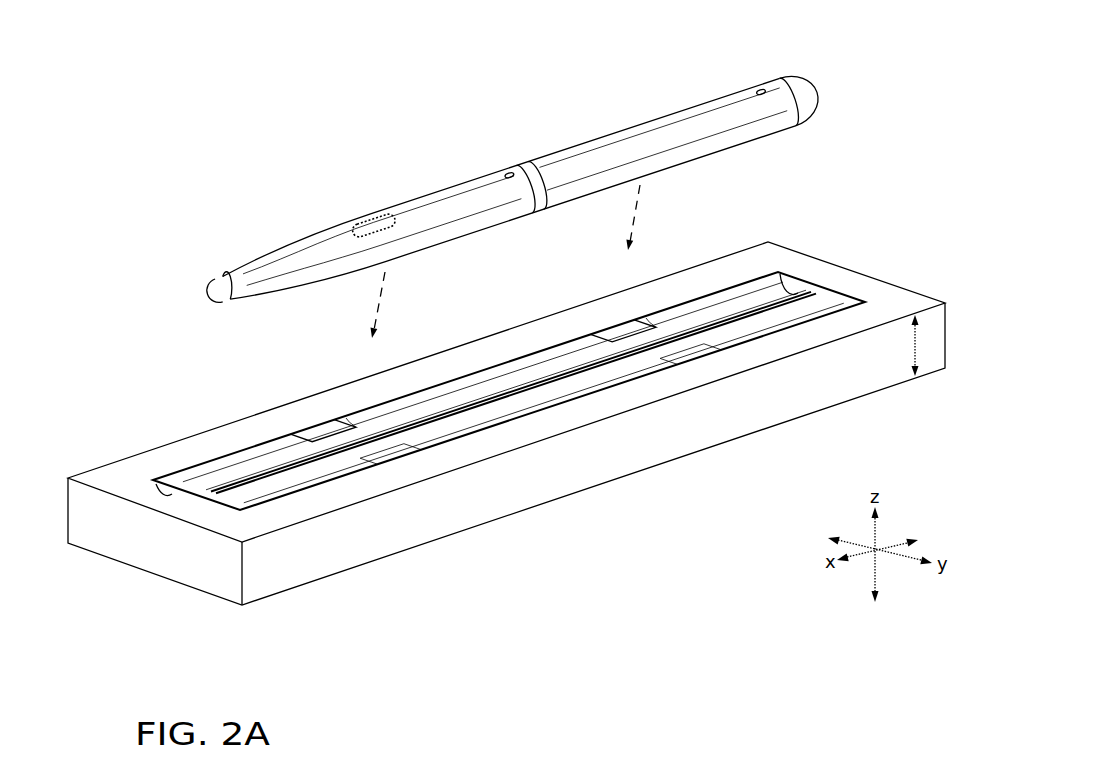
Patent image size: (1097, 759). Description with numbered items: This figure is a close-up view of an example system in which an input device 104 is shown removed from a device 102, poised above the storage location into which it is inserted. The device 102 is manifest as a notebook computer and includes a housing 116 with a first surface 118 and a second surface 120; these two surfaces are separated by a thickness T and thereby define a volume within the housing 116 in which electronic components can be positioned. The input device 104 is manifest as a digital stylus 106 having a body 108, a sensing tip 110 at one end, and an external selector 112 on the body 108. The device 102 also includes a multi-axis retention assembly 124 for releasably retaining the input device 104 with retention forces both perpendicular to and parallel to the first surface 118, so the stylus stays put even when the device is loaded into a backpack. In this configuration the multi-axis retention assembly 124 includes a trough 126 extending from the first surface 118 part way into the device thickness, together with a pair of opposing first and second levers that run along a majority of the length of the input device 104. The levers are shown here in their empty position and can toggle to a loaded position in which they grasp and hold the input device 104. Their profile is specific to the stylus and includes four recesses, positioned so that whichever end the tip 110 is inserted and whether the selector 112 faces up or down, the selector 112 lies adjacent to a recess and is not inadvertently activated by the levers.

The device 102 is at (208, 618).
The input device 104 is at (873, 50).
The digital stylus 106 is at (660, 116).
The body 108 is at (680, 111).
The sensing tip 110 is at (213, 281).
The external selector 112 is at (365, 224).
The housing 116 is at (349, 580).
The first surface 118 is at (118, 473).
The second surface 120 is at (270, 597).
The multi-axis retention assembly 124 is at (213, 447).
The trough 126 is at (807, 293).